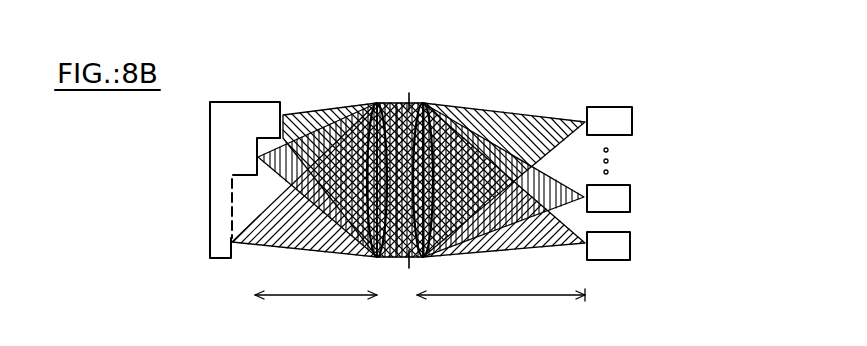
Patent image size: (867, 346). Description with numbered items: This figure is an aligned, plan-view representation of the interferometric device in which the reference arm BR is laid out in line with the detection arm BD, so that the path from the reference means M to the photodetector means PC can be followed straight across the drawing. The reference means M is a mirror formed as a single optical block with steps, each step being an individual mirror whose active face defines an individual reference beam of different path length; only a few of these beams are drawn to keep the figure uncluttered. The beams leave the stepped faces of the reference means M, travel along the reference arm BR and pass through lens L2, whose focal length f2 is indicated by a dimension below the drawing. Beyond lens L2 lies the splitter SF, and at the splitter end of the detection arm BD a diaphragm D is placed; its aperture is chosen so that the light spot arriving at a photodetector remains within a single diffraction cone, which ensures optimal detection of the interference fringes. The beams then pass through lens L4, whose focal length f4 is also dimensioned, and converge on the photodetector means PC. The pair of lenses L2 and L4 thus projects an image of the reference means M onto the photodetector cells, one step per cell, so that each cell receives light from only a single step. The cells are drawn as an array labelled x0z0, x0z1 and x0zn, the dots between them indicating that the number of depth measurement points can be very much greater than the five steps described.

The reference means M is at (220, 247).
The reference arm BR is at (322, 83).
The splitter SF is at (398, 100).
The lens L2 is at (368, 165).
The lens L4 is at (430, 165).
The diaphragm D is at (408, 258).
The detection arm BD is at (525, 92).
The photodetector means PC is at (636, 148).
The photodetector cell x0zn is at (609, 121).
The photodetector cell x0z1 is at (608, 199).
The photodetector cell x0z0 is at (608, 246).
The focal length of lens L2 f2 is at (316, 280).
The focal length of lens L4 f4 is at (501, 281).